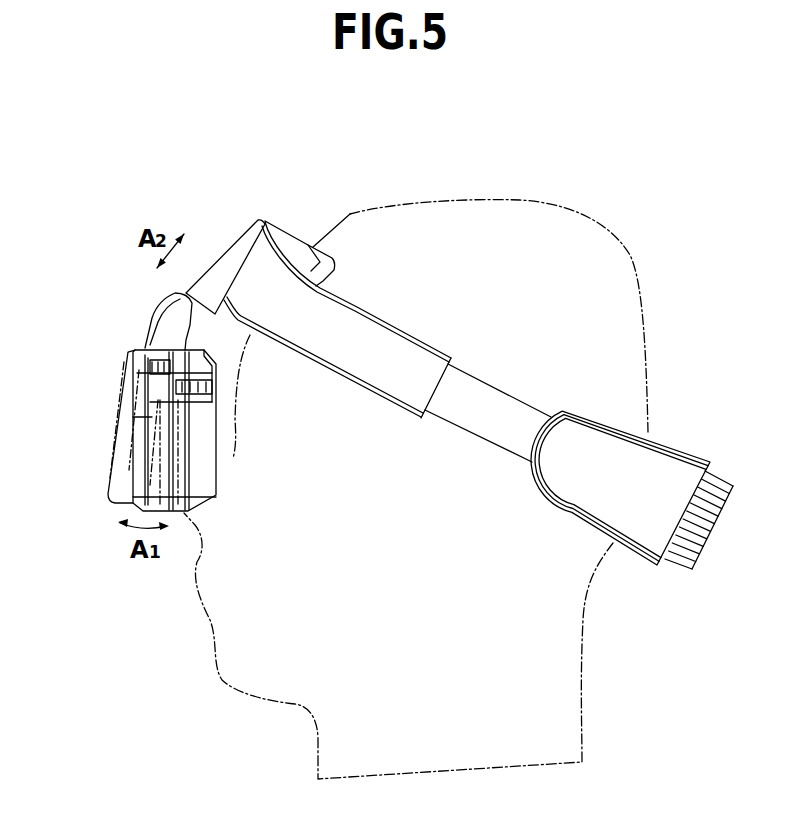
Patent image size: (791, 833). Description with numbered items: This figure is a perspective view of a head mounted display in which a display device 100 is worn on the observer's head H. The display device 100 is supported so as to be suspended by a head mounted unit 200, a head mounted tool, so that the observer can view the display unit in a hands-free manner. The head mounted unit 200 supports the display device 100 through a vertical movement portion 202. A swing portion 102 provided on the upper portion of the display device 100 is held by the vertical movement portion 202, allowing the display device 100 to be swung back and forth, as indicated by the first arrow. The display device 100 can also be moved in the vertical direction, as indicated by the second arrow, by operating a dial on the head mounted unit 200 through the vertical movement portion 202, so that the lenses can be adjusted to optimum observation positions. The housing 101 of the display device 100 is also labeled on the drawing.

The display device 100 is at (221, 503).
The housing 101 is at (165, 452).
The swing portion 102 is at (172, 322).
The head mounted unit 200 is at (292, 206).
The vertical movement portion 202 is at (238, 238).
The head H is at (600, 237).